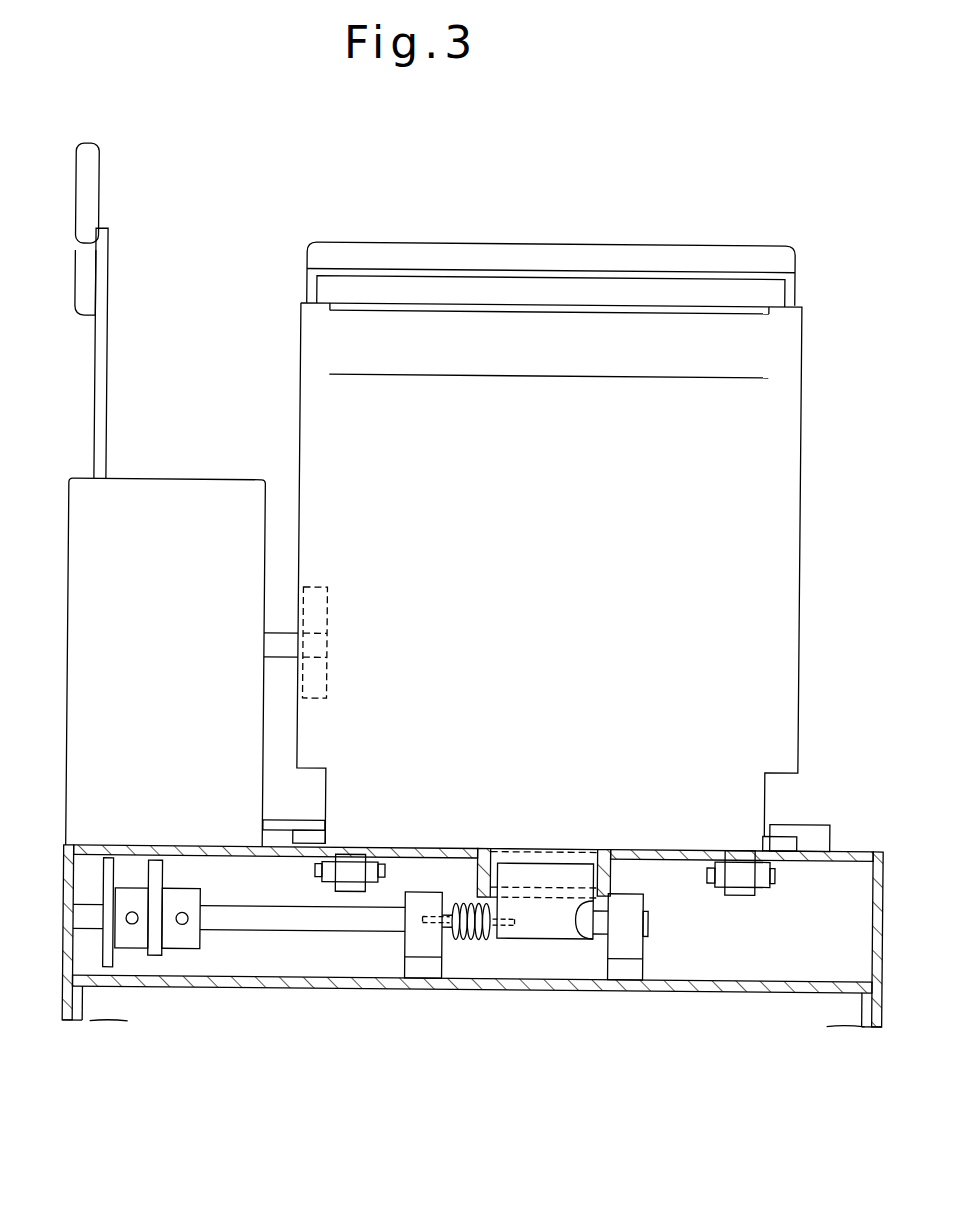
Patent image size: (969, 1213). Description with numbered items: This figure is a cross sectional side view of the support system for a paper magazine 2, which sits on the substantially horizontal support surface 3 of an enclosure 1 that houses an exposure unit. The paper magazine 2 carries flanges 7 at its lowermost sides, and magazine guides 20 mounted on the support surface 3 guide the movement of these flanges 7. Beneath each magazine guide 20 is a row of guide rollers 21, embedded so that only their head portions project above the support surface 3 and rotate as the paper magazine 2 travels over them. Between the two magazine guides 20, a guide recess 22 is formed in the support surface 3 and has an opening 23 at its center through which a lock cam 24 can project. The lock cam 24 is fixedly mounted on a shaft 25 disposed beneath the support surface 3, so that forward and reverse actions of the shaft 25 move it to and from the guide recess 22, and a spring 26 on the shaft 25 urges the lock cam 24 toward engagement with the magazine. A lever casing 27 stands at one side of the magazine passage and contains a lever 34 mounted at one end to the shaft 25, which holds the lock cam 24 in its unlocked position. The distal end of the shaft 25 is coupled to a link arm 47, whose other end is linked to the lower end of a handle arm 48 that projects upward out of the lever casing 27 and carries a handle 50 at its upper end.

The enclosure 1 is at (63, 1003).
The paper magazine 2 is at (549, 246).
The support surface 3 is at (662, 850).
The flange 7 is at (782, 838).
The magazine guide 20 is at (296, 828).
The guide roller 21 is at (352, 868).
The guide recess 22 is at (488, 857).
The opening 23 is at (580, 910).
The lock cam 24 is at (538, 930).
The shaft 25 is at (330, 920).
The spring 26 is at (472, 942).
The lever casing 27 is at (221, 485).
The lever 34 is at (157, 958).
The link arm 47 is at (110, 870).
The handle arm 48 is at (102, 395).
The handle 50 is at (85, 180).